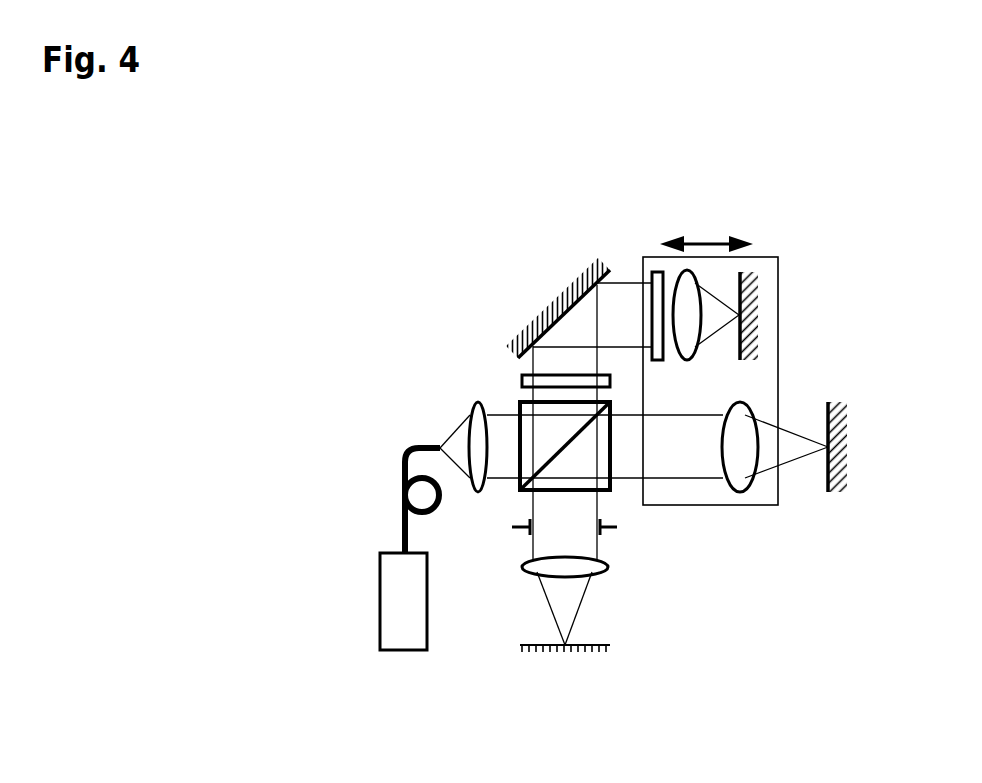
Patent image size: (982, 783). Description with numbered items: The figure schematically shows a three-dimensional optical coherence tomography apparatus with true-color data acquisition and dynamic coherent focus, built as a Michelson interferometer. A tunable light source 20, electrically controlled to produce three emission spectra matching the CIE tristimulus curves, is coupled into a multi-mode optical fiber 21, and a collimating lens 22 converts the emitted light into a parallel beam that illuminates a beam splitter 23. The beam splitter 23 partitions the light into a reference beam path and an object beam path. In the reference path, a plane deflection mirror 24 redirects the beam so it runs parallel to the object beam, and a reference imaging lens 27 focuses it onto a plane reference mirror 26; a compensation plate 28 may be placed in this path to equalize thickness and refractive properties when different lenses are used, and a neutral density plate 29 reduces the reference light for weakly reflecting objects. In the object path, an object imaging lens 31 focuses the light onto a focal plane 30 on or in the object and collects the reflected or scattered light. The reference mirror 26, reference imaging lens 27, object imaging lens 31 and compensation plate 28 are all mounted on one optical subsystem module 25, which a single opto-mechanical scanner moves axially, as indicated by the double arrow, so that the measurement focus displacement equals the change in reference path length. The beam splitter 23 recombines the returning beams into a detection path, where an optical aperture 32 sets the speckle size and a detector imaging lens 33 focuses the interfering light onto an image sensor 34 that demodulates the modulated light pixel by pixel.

The tunable light source 20 is at (381, 601).
The multi-mode optical fiber 21 is at (417, 484).
The collimating lens 22 is at (461, 431).
The beam splitter 23 is at (577, 460).
The plane deflection mirror 24 is at (558, 300).
The optical subsystem module 25 is at (730, 370).
The plane reference mirror 26 is at (753, 283).
The reference imaging lens 27 is at (682, 300).
The compensation plate 28 is at (648, 272).
The neutral density plate 29 is at (522, 377).
The focal plane 30 is at (857, 447).
The object imaging lens 31 is at (740, 455).
The optical aperture 32 is at (608, 533).
The detector imaging lens 33 is at (580, 565).
The image sensor 34 is at (565, 645).